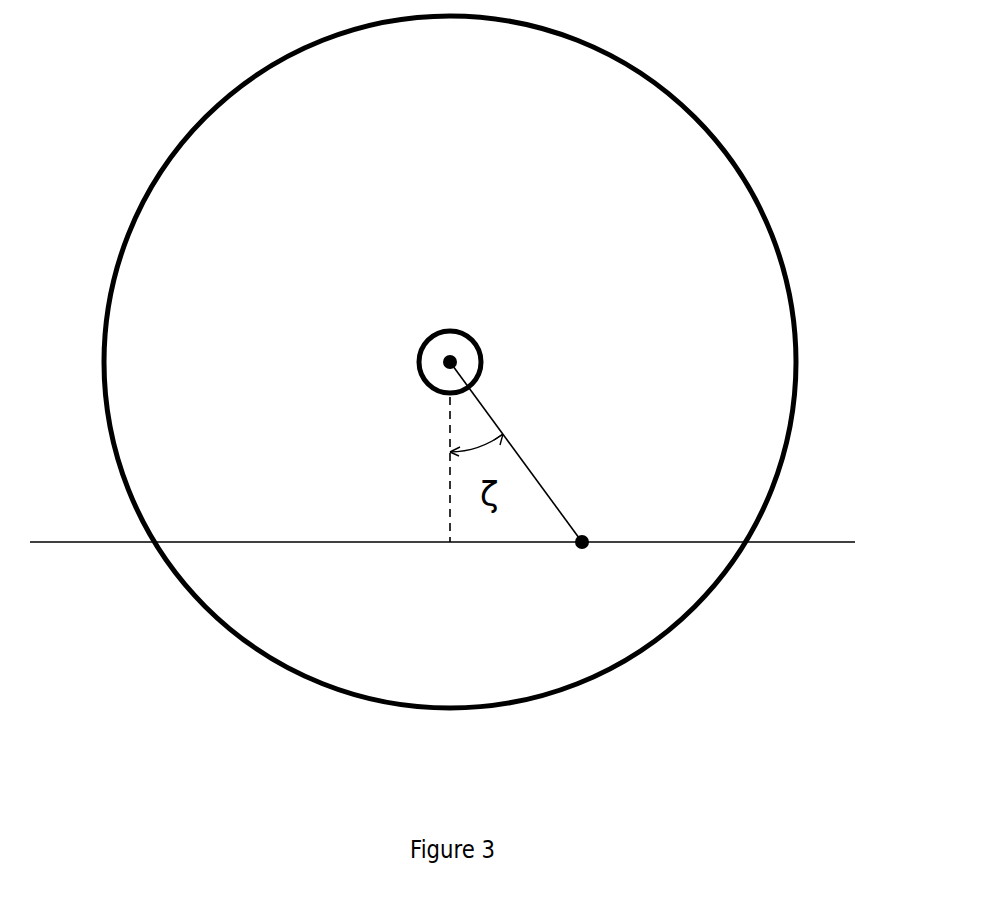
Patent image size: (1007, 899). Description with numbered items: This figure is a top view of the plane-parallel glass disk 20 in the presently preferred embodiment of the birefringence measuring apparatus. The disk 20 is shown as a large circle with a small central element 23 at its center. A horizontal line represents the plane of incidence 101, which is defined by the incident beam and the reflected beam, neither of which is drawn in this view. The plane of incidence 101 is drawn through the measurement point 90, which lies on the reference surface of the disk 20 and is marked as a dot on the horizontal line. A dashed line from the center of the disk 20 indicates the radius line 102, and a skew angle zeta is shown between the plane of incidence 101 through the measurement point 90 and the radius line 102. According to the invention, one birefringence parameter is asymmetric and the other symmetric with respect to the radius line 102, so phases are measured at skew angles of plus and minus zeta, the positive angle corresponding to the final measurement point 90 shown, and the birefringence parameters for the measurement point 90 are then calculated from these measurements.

The plane-parallel glass disk 20 is at (774, 235).
The wheel axle / hub center 23 is at (457, 360).
The measurement point 90 is at (583, 550).
The plane of incidence 101 is at (138, 543).
The radius line 102 is at (406, 469).